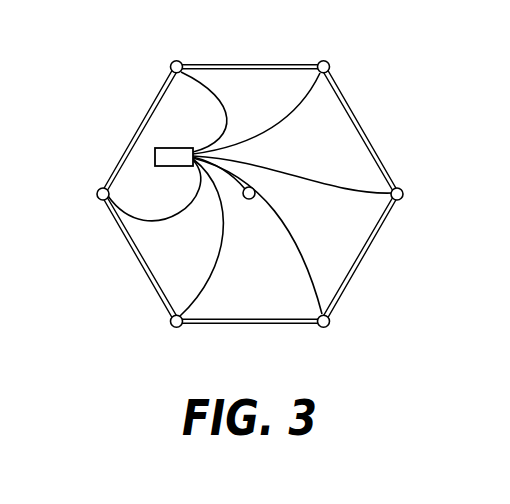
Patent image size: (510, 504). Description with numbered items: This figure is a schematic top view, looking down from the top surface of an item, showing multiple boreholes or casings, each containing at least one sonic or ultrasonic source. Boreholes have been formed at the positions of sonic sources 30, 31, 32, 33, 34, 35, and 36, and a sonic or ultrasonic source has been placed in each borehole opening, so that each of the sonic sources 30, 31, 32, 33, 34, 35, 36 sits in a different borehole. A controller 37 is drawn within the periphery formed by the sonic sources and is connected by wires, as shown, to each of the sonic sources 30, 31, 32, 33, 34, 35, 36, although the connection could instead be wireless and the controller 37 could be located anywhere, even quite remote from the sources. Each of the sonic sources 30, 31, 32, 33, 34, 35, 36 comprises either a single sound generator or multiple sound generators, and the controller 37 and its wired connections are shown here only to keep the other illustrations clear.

The sonic source 30 is at (250, 199).
The sonic source 31 is at (403, 190).
The sonic source 32 is at (329, 65).
The sonic source 33 is at (171, 64).
The sonic source 34 is at (97, 195).
The sonic source 35 is at (170, 322).
The sonic source 36 is at (328, 325).
The controller 37 is at (165, 148).